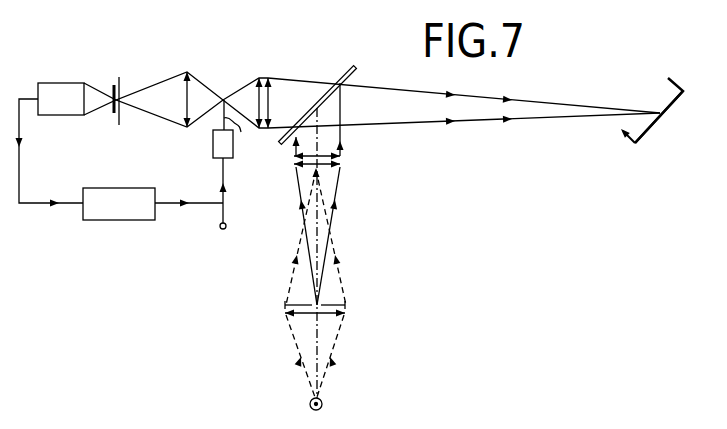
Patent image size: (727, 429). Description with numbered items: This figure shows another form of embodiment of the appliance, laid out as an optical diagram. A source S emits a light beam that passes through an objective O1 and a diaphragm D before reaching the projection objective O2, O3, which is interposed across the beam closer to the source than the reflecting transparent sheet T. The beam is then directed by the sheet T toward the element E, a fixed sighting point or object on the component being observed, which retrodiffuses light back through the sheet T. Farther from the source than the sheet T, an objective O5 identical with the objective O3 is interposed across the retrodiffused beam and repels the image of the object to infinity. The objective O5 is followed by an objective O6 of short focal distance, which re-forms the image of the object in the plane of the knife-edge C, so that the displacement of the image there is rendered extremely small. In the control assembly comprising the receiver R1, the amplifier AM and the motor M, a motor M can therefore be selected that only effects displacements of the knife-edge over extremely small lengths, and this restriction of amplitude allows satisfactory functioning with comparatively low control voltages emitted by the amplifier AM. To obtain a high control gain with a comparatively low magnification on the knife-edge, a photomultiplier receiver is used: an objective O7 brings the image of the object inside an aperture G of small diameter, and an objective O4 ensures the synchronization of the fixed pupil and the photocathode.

The receiver R1 is at (67, 74).
The objective O4 is at (103, 85).
The aperture G is at (120, 100).
The objective O7 is at (186, 87).
The objective O6 is at (249, 91).
The objective O5 is at (277, 90).
The reflecting transparent sheet T is at (339, 73).
The element E is at (656, 112).
The motor M is at (213, 145).
The knife-edge C is at (238, 136).
The amplifier AM is at (119, 192).
The objective O3 is at (334, 156).
The objective O2 is at (334, 176).
The diaphragm D is at (325, 298).
The objective O1 is at (329, 326).
The source S is at (325, 410).